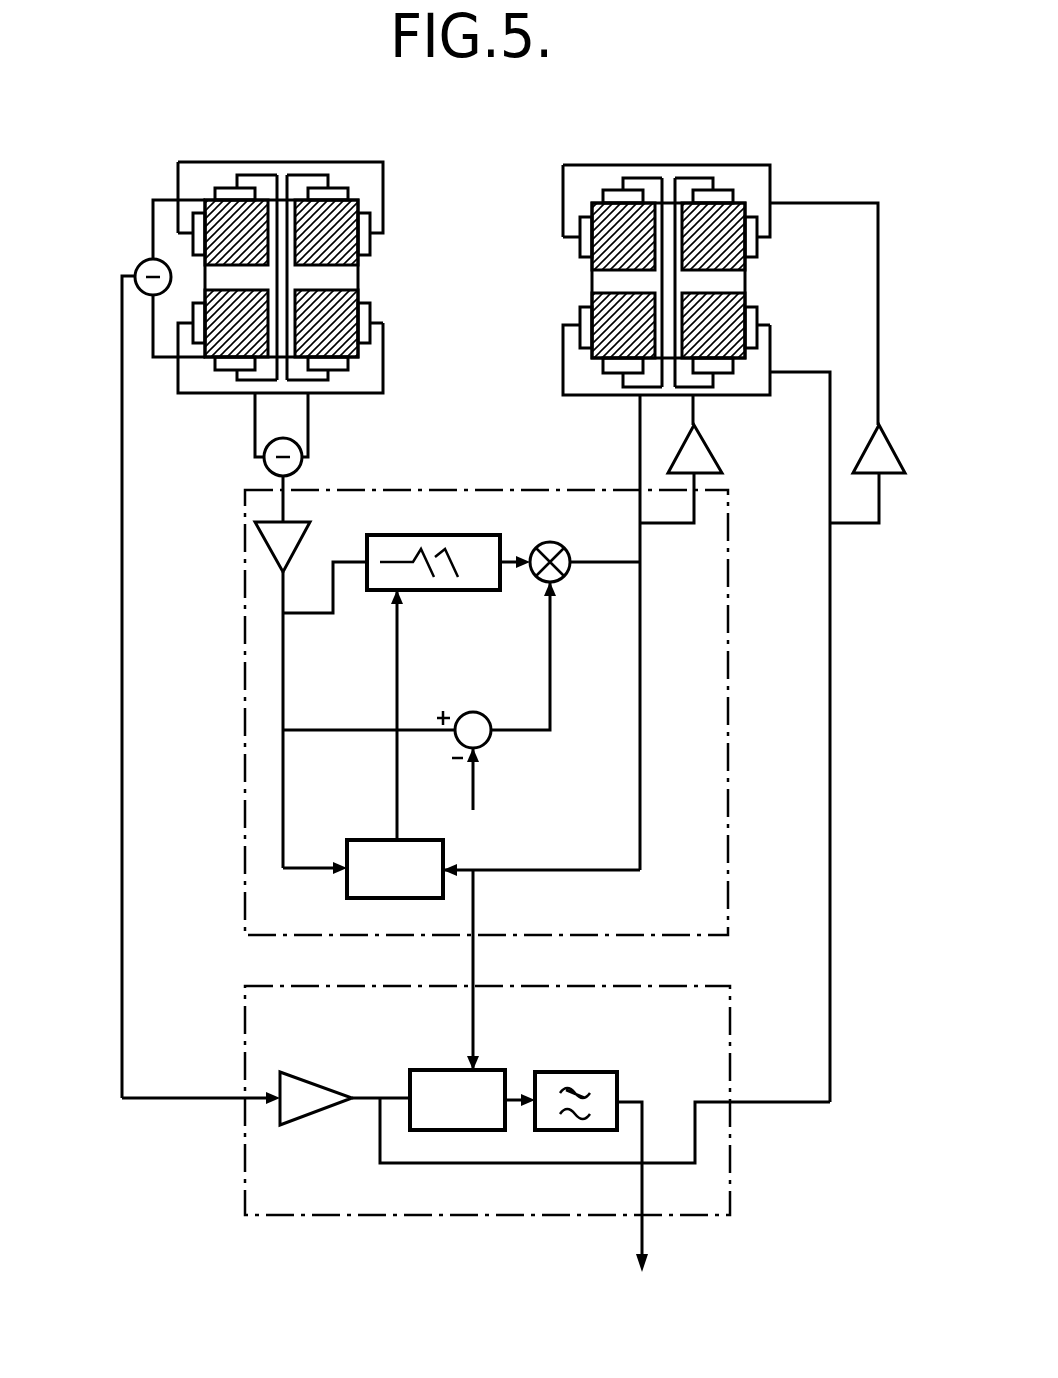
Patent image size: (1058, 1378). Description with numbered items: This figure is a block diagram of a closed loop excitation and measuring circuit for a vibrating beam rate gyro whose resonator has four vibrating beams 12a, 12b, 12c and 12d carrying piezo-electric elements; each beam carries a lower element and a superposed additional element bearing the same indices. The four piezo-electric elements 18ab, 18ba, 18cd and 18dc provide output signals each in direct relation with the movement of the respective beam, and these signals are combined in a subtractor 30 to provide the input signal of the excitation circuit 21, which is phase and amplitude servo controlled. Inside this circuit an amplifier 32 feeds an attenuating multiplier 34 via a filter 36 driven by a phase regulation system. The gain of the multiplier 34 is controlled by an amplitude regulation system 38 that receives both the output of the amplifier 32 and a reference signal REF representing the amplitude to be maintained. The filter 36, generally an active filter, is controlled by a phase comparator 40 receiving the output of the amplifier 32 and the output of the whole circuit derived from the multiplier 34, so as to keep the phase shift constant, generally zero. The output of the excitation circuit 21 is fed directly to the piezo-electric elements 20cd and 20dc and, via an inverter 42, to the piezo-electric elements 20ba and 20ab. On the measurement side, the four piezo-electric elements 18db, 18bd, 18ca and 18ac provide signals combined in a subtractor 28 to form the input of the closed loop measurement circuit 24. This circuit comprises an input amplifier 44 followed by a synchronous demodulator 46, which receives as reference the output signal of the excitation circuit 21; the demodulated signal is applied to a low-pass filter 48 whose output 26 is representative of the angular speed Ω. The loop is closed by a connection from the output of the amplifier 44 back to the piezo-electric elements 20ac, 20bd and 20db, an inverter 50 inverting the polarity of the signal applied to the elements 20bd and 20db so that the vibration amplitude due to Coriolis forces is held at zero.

The vibrating beam 12a is at (345, 305).
The vibrating beam 12b is at (355, 200).
The vibrating beam 12c is at (210, 345).
The vibrating beam 12d is at (222, 220).
The piezo-electric element 18dc is at (222, 190).
The piezo-electric element 18ba is at (334, 192).
The piezo-electric element 18db is at (195, 243).
The piezo-electric element 18bd is at (370, 240).
The piezo-electric element 18ca is at (195, 315).
The piezo-electric element 18ac is at (370, 325).
The piezo-electric element 18cd is at (228, 368).
The piezo-electric element 18ab is at (348, 365).
The piezo-electric element 20dc is at (618, 192).
The piezo-electric element 20ba is at (720, 192).
The piezo-electric element 20db is at (580, 243).
The piezo-electric element 20bd is at (757, 258).
The piezo-electric element 20ac is at (760, 318).
The piezo-electric element 20cd is at (618, 368).
The piezo-electric element 20ab is at (720, 370).
The excitation circuit 21 is at (245, 850).
The closed loop measurement circuit 24 is at (245, 1137).
The output 26 is at (650, 1251).
The subtractor 28 is at (136, 270).
The subtractor 30 is at (262, 468).
The amplifier 32 is at (258, 541).
The multiplier 34 is at (563, 548).
The filter 36 is at (455, 528).
The amplitude regulation system 38 is at (478, 712).
The phase comparator 40 is at (365, 840).
The inverter 42 is at (718, 456).
The input amplifier 44 is at (298, 1073).
The synchronous demodulator 46 is at (430, 1072).
The low-pass filter 48 is at (580, 1072).
The inverter 50 is at (888, 452).